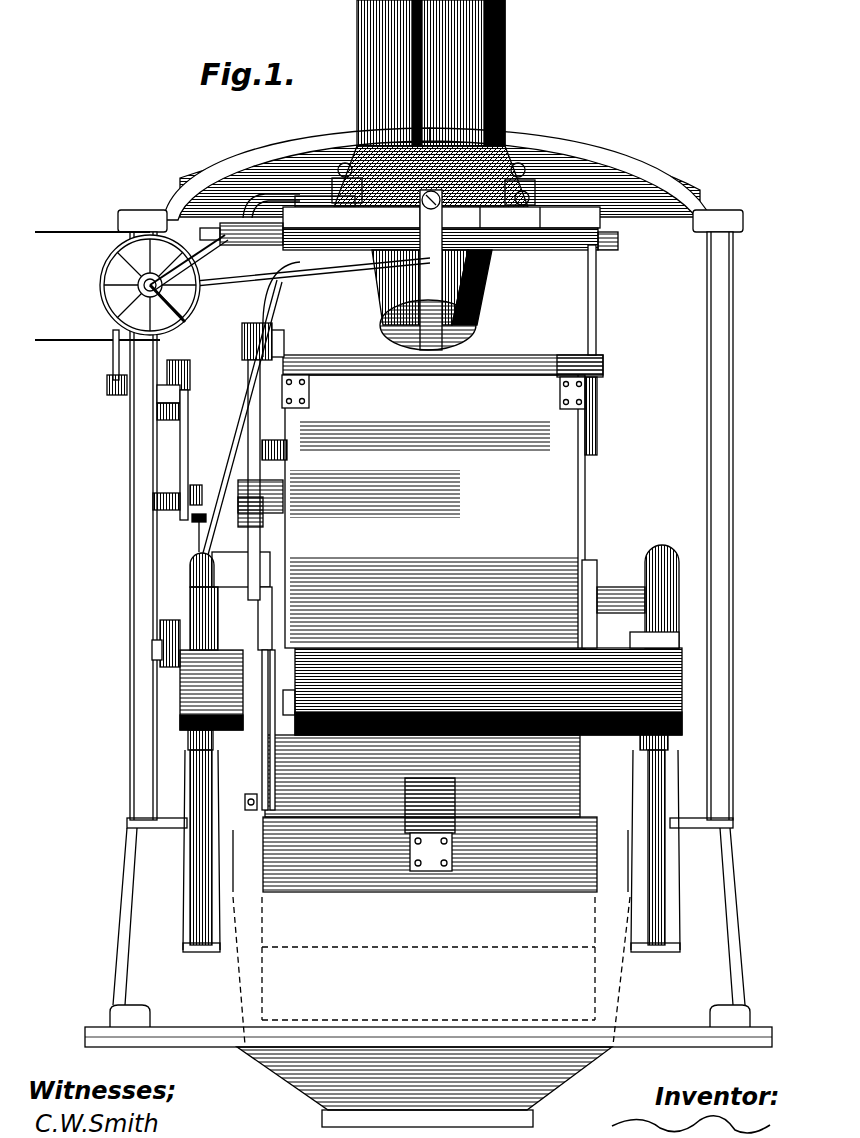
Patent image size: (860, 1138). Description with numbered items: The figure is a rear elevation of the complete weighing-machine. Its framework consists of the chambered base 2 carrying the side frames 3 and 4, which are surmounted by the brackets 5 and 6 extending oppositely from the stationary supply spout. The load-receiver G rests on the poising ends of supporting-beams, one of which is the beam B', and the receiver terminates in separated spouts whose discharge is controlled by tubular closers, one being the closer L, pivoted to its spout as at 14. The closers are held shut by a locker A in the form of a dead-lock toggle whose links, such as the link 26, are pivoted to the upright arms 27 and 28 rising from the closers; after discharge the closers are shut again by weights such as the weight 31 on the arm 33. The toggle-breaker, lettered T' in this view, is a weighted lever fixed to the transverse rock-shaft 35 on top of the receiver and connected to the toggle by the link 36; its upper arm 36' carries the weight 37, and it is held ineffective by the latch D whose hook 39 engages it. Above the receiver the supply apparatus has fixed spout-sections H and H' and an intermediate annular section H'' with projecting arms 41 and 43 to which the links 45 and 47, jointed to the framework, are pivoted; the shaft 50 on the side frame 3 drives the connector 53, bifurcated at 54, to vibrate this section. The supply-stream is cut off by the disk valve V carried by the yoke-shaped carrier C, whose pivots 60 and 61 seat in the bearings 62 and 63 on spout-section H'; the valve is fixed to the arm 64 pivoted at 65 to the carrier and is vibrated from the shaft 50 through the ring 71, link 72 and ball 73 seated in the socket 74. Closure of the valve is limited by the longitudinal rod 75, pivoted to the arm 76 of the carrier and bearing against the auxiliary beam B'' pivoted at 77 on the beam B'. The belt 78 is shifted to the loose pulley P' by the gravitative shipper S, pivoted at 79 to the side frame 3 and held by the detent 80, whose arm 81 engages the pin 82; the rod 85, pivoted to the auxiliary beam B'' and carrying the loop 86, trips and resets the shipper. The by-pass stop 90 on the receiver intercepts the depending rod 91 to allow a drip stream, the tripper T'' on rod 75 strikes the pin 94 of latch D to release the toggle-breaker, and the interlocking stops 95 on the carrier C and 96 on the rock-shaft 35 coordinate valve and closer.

The chambered base 2 is at (431, 971).
The side frame 3 is at (130, 476).
The side frame 4 is at (722, 494).
The bracket 5 is at (262, 152).
The bracket 6 is at (614, 150).
The pivot 14 is at (248, 805).
The toggle link 26 is at (243, 686).
The upright arm 27 is at (262, 742).
The upright arm 28 is at (270, 762).
The weight 31 is at (436, 790).
The arm 33 is at (429, 872).
The transverse rock-shaft 35 is at (450, 366).
The link 36 is at (250, 601).
The upper arm of toggle-breaker 36' is at (257, 328).
The weight 37 is at (284, 342).
The hook 39 is at (280, 456).
The projecting arm 41 is at (441, 217).
The projecting arm 43 is at (517, 217).
The link 45 is at (352, 172).
The link 47 is at (531, 196).
The shaft 50 is at (138, 290).
The connector 53 is at (212, 248).
The bifurcation 54 is at (308, 197).
The pivot 60 is at (266, 246).
The pivot 61 is at (618, 243).
The bearing 62 is at (346, 266).
The bearing 63 is at (540, 250).
The arm 64 is at (398, 302).
The pivot 65 is at (519, 163).
The ring 71 is at (173, 303).
The link 72 is at (310, 272).
The ball 73 is at (450, 298).
The socket 74 is at (450, 217).
The longitudinal rod 75 is at (214, 440).
The arm 76 is at (262, 200).
The pivot 77 is at (152, 650).
The belt 78 is at (72, 231).
The pivot 79 is at (107, 388).
The detent 80 is at (180, 425).
The weighted arm 81 is at (157, 410).
The pin 82 is at (157, 392).
The rod 85 is at (190, 492).
The loop 86 is at (181, 361).
The by-pass stop 90 is at (292, 406).
The depending rod 91 is at (272, 318).
The pin 94 is at (198, 520).
The interlocking stop 95 is at (598, 301).
The interlocking stop 96 is at (598, 400).
The locker A is at (285, 702).
The supporting-beam B' is at (630, 596).
The auxiliary beam B'' is at (144, 643).
The yoke-shaped carrier C is at (560, 213).
The latch D is at (283, 490).
The load-receiver G is at (435, 511).
The spout-section H is at (431, 73).
The stationary spout-section H' is at (479, 287).
The intermediate spout-section H'' is at (431, 176).
The tubular closer L is at (430, 854).
The loose pulley P' is at (139, 285).
The belt-shipper S is at (113, 362).
The rod T' is at (248, 480).
The tripper T'' is at (144, 517).
The valve V is at (386, 333).